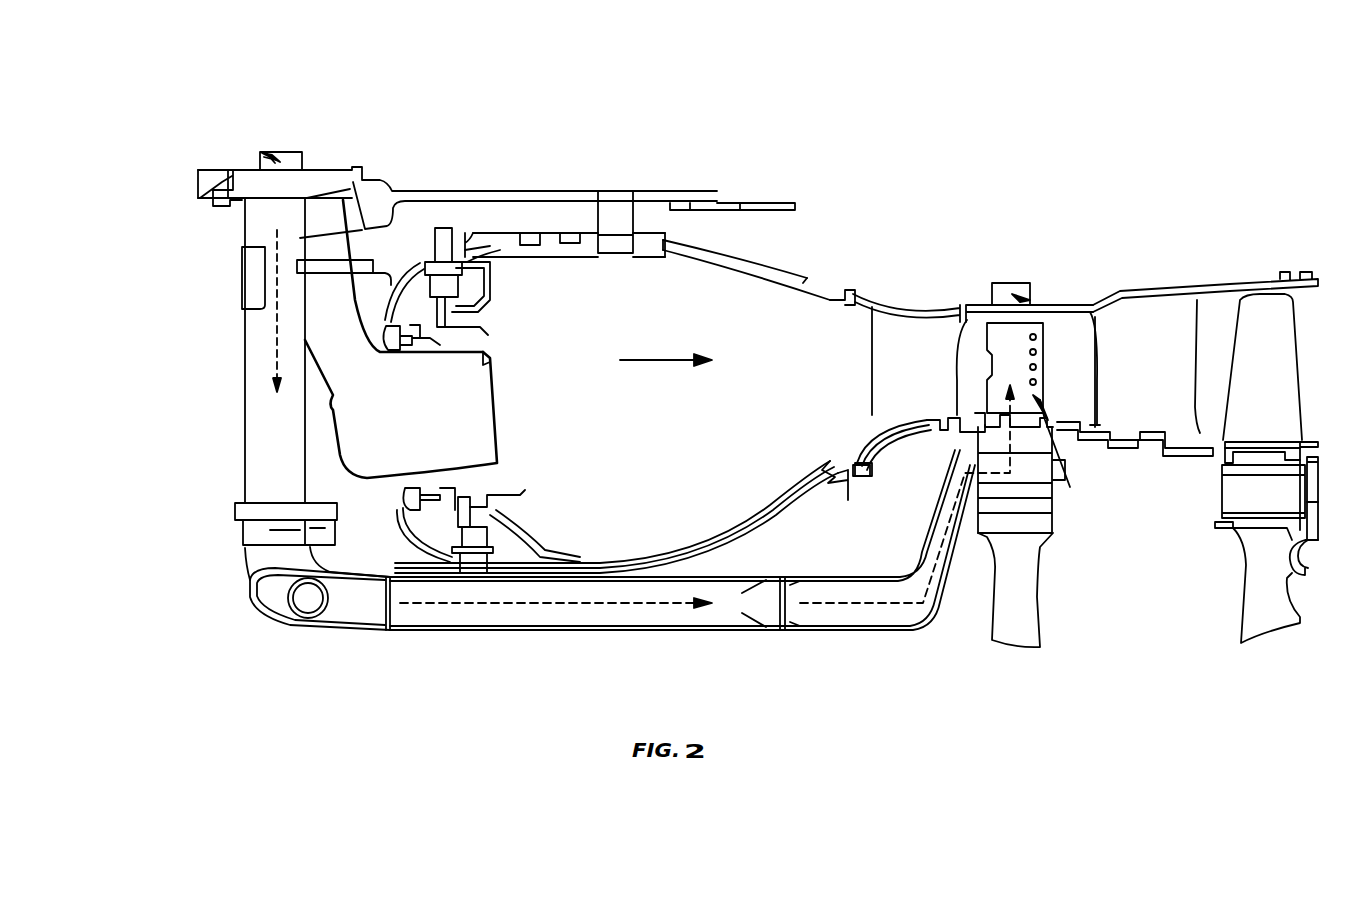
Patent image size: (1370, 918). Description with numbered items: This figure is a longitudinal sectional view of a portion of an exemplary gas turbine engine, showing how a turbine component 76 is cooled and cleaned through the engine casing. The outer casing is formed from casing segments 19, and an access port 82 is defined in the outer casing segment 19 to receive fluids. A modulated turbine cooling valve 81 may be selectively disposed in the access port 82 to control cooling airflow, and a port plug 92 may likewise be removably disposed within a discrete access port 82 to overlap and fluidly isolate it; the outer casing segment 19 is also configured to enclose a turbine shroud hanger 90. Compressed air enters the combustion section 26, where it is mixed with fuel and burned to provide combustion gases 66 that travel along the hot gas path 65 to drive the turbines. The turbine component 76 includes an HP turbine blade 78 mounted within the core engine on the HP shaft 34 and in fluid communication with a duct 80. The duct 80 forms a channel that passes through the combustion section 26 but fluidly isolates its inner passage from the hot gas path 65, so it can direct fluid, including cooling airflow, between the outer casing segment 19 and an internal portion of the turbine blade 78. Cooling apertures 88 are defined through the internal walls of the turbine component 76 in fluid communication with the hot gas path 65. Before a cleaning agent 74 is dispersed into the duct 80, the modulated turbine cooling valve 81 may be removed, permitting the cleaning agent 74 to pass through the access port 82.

The outer casing segment 19 is at (325, 176).
The combustion section 26 is at (765, 277).
The high pressure shaft 34 is at (967, 440).
The hot gas path 65 is at (641, 418).
The combustion gases 66 is at (659, 358).
The cleaning agent 74 is at (495, 607).
The turbine component 76 is at (954, 329).
The HP turbine blade 78 is at (1000, 335).
The duct 80 is at (808, 631).
The modulated turbine cooling valve 81 is at (284, 151).
The access port 82 is at (262, 153).
The cooling aperture 88 is at (1070, 487).
The turbine shroud hanger 90 is at (992, 310).
The port plug 92 is at (1012, 283).